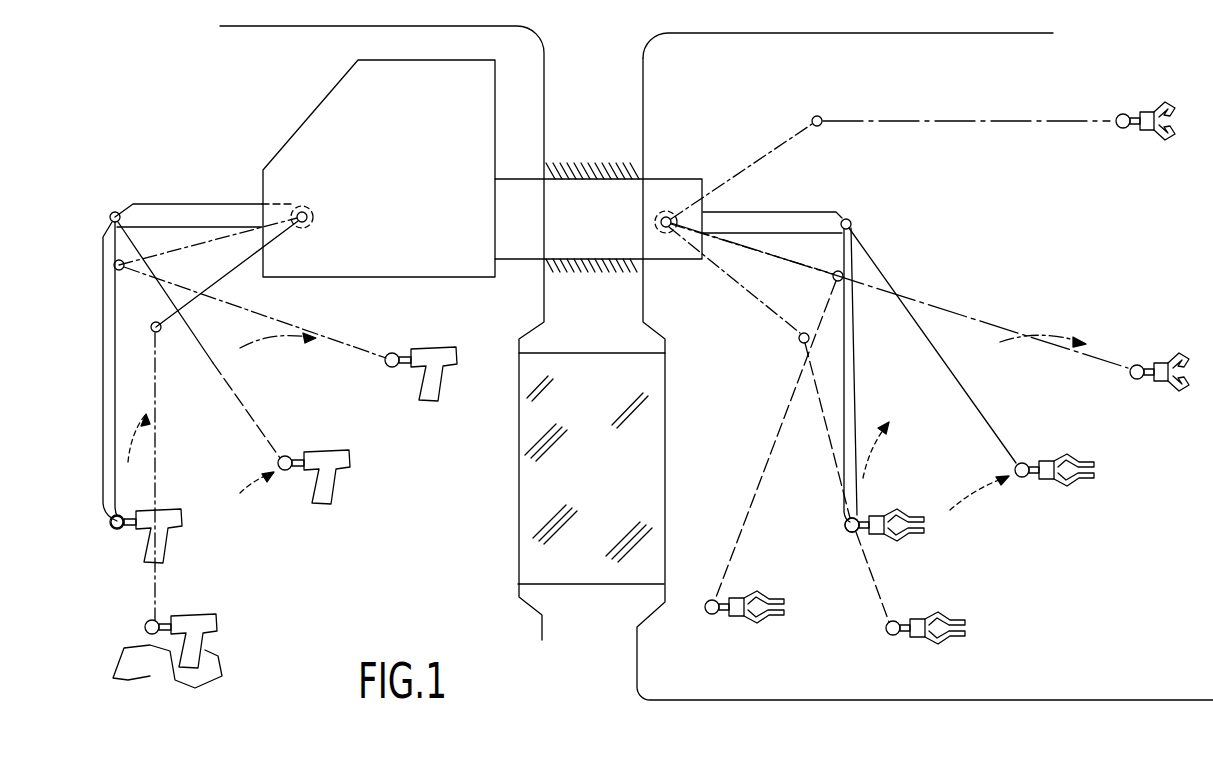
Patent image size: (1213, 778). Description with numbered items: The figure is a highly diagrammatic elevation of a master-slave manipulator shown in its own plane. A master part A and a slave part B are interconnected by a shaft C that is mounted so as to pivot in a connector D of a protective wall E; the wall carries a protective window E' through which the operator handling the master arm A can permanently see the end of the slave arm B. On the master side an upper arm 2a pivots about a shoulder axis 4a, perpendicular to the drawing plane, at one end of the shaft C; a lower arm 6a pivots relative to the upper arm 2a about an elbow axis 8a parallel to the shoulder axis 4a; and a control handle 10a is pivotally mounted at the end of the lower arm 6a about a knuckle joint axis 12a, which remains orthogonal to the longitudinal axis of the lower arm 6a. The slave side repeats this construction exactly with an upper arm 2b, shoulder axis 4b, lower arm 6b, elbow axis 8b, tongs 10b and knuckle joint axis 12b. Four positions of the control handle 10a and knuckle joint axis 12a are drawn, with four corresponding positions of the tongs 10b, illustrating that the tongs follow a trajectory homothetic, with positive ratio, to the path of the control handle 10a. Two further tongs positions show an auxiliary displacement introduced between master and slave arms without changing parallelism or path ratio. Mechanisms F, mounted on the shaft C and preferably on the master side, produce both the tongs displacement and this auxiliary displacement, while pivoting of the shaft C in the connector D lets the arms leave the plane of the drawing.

The upper arm 2a is at (203, 204).
The shoulder axis 4a is at (308, 213).
The lower arm 6a is at (117, 379).
The elbow axis 8a is at (112, 214).
The control handle 10a is at (172, 506).
The knuckle joint axis 12a is at (103, 530).
The upper arm 2b is at (786, 212).
The shoulder axis 4b is at (669, 215).
The lower arm 6b is at (847, 428).
The elbow axis 8b is at (846, 219).
The tongs 10b is at (883, 510).
The knuckle joint axis 12b is at (845, 524).
The master part A is at (251, 84).
The slave part B is at (728, 89).
The shaft C is at (584, 228).
The connector D is at (563, 179).
The protective wall E is at (592, 184).
The protective window E' is at (591, 468).
The mechanisms F is at (410, 100).